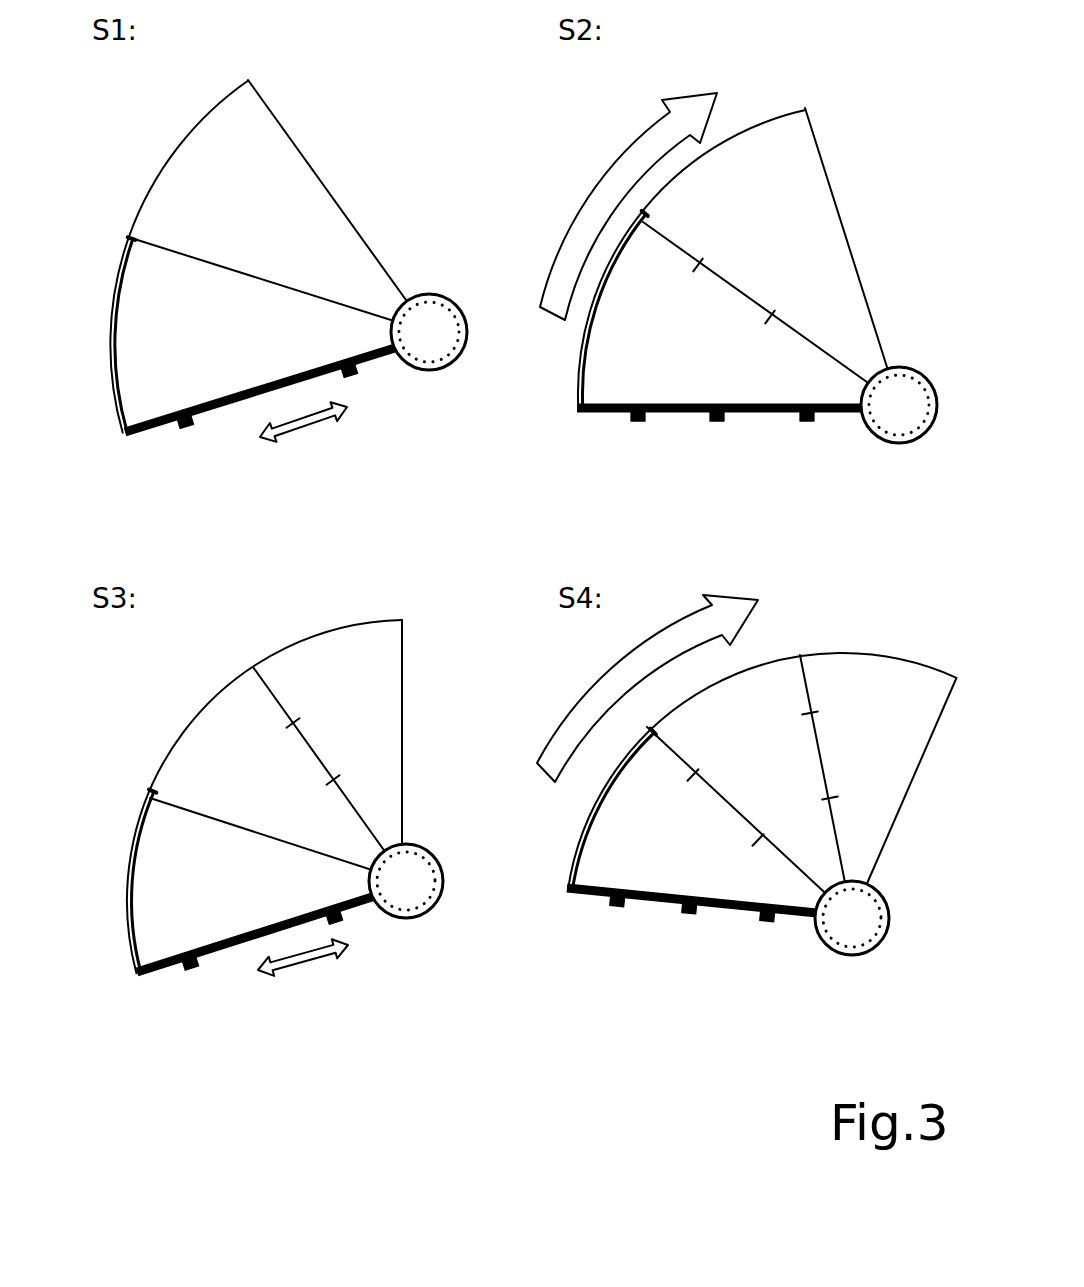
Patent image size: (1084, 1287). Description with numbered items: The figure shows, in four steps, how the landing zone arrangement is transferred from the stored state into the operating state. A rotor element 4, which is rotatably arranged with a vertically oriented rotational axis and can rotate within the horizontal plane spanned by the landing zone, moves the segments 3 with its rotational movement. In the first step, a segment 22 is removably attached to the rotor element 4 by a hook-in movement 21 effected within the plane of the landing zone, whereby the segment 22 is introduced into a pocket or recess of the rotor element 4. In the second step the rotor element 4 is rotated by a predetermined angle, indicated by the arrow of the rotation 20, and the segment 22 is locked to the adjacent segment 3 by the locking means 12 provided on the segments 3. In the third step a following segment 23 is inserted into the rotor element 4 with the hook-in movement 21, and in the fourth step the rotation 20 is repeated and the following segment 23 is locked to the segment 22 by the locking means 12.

The segment 3 is at (187, 180).
The rotor element 4 is at (433, 345).
The locking means 12 is at (698, 263).
The rotation 20 is at (583, 233).
The hook-in movement 21 is at (305, 414).
The segment 22 is at (150, 393).
The following segment 23 is at (153, 940).